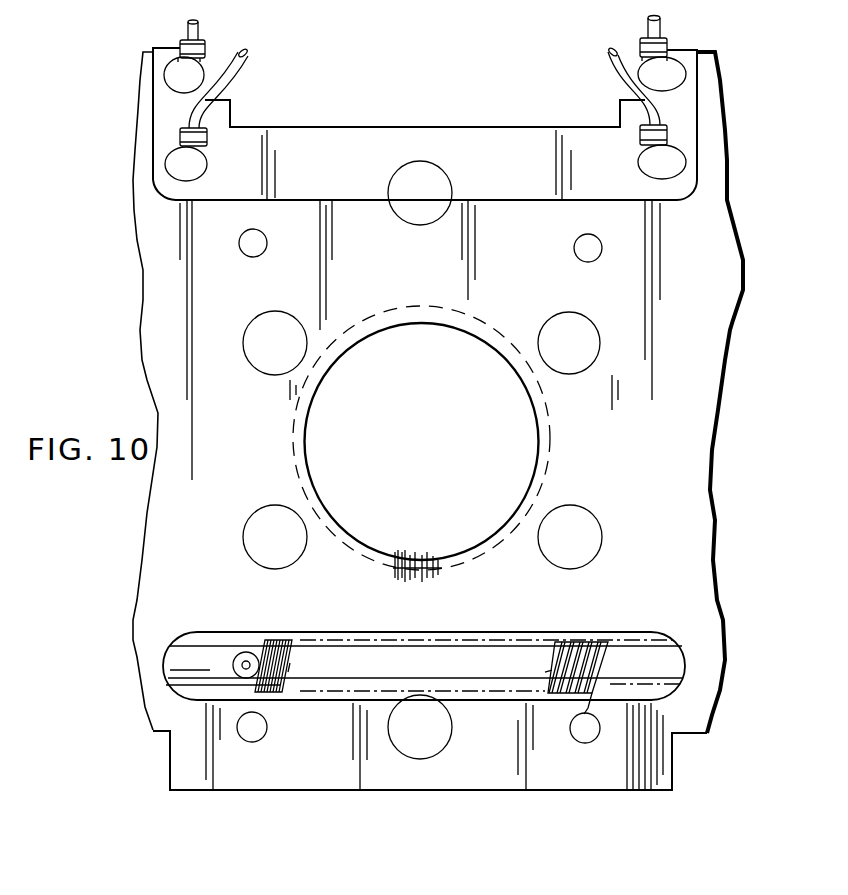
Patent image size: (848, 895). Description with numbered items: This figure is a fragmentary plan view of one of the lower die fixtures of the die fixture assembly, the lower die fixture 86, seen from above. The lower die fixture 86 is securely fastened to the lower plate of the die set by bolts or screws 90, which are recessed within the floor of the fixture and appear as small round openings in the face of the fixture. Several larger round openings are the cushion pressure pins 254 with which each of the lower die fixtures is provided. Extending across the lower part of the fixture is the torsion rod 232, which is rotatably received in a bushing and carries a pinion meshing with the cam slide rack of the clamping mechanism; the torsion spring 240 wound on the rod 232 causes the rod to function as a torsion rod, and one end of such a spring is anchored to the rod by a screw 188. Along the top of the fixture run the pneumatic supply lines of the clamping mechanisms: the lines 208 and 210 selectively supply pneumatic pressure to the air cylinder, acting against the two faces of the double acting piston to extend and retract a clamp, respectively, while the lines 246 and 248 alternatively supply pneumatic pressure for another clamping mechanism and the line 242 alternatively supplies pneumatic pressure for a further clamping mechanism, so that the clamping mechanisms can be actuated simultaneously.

The lower die fixture 86 is at (686, 411).
The bolts or screws 90 is at (253, 255).
The screw 188 is at (243, 654).
The pneumatic line 208 is at (607, 74).
The pneumatic line 210 is at (663, 27).
The torsion rod 232 is at (178, 662).
The torsion spring 240 is at (595, 652).
The pneumatic line 242 is at (579, 5).
The pneumatic line 246 is at (183, 29).
The pneumatic line 248 is at (246, 72).
The cushion pressure pins 254 is at (434, 130).